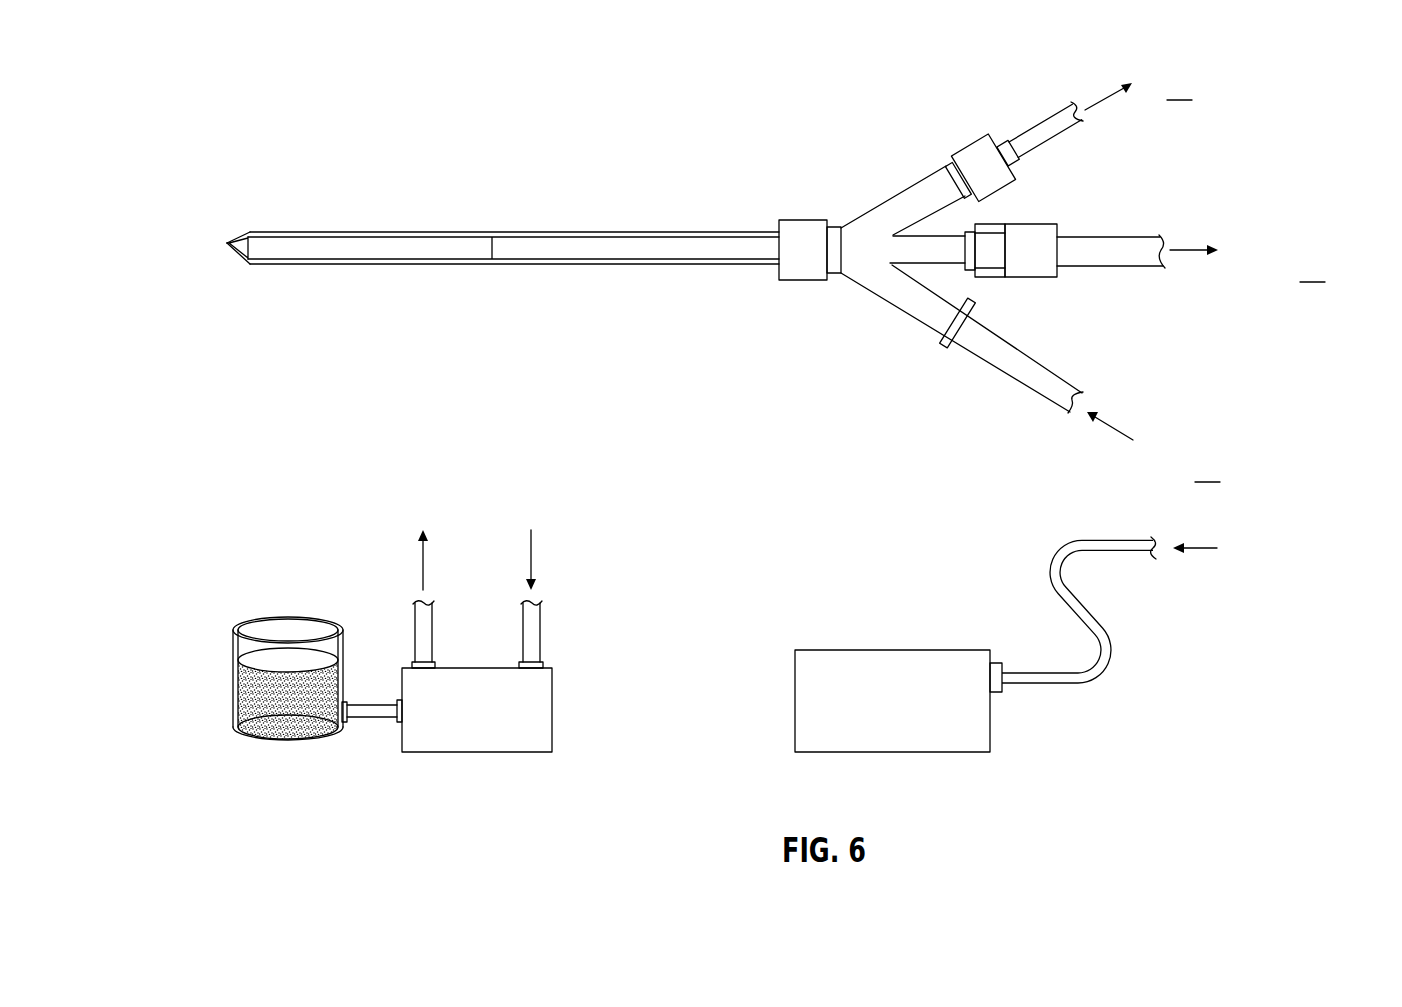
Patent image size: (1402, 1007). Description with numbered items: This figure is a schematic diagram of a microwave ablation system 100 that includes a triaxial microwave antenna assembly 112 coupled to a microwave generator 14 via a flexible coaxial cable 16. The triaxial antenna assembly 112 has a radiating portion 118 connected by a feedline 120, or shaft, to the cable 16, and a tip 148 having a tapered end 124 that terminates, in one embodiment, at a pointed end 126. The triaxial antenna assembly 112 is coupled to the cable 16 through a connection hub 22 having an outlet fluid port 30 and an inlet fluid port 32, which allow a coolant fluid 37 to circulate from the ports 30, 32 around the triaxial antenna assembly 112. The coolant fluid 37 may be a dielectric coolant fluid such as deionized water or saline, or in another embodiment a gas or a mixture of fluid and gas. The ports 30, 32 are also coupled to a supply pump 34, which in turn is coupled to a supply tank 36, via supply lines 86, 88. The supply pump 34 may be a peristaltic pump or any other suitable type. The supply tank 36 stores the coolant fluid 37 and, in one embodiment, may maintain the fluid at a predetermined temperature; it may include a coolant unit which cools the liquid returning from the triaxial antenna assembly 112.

The microwave ablation system 100 is at (324, 84).
The triaxial microwave antenna assembly 112 is at (757, 157).
The radiating portion 118 is at (352, 232).
The feedline 120 is at (605, 232).
The tapered end 124 is at (247, 233).
The pointed end 126 is at (228, 247).
The tip 148 is at (242, 258).
The outlet fluid port 30 is at (967, 157).
The supply line 88 is at (1050, 123).
The connection hub 22 is at (873, 318).
The inlet fluid port 32 is at (943, 338).
The supply line 86 is at (1025, 370).
The flexible coaxial cable 16 is at (1107, 236).
The supply pump 34 is at (488, 735).
The microwave generator 14 is at (905, 727).
The supply tank 36 is at (233, 672).
The coolant fluid 37 is at (233, 703).